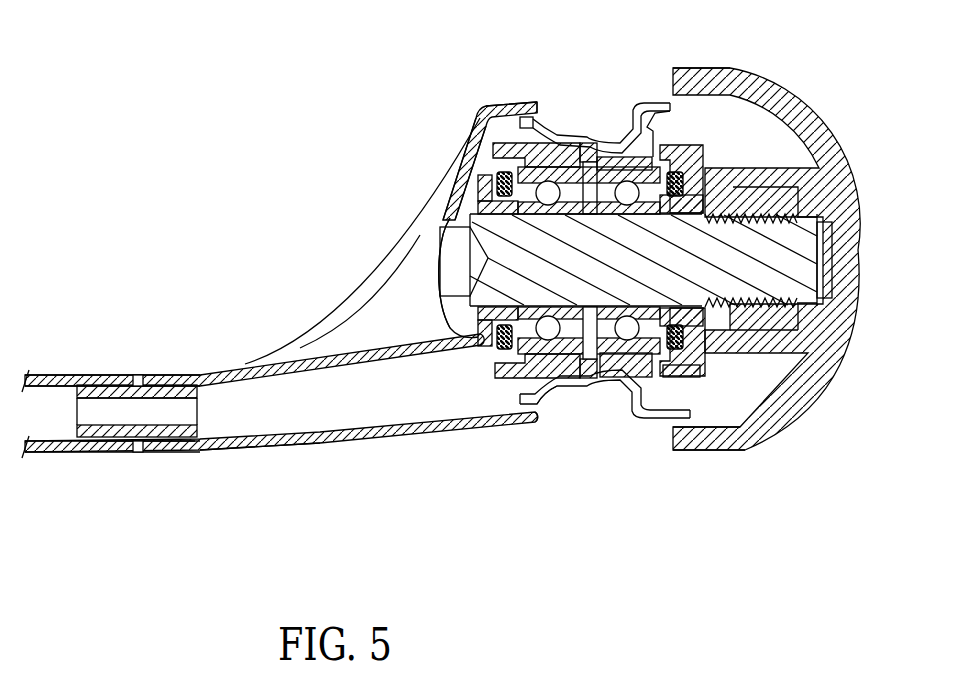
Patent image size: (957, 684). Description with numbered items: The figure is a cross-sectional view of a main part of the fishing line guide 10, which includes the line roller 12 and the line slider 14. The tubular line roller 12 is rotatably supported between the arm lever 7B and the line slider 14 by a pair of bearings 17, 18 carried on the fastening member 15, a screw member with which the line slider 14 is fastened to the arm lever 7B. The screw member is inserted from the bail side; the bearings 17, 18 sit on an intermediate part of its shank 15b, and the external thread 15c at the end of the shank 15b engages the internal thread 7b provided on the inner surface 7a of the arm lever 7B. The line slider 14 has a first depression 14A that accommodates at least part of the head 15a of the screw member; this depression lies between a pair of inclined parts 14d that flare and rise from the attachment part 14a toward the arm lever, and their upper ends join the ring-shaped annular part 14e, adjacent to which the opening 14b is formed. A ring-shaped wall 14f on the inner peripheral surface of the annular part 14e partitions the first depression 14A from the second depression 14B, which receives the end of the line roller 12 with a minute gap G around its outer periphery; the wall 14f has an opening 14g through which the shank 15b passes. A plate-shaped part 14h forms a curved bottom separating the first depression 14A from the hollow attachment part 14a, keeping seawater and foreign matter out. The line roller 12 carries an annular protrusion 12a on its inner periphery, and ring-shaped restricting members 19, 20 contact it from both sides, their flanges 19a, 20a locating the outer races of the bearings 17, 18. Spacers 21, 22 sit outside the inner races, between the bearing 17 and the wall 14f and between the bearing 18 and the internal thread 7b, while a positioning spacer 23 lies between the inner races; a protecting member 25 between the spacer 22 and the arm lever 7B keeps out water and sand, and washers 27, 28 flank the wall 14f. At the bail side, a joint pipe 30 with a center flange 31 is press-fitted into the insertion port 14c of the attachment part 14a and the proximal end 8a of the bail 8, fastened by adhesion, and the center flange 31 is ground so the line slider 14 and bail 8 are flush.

The inner surface 7a is at (675, 74).
The protecting member 25 is at (750, 70).
The spacer 22 is at (700, 155).
The internal thread 7b is at (785, 192).
The arm lever 7B is at (792, 400).
The restricting member 20 is at (680, 362).
The line slider 14 is at (478, 105).
The annular part 14e is at (510, 103).
The gap G is at (533, 102).
The shank 15b is at (549, 140).
The restricting member 19 is at (546, 157).
The flange 19a is at (586, 143).
The bearing 18 is at (606, 157).
The second depression 14B is at (483, 162).
The washer 27 is at (480, 217).
The opening 14g is at (468, 196).
The inclined part 14d is at (430, 240).
The first depression 14A is at (433, 270).
The fastening member 15 is at (452, 302).
The head 15a is at (456, 312).
The external thread 15c is at (770, 297).
The plate-shaped part 14h is at (348, 352).
The bail 8 is at (48, 375).
The center flange 31 is at (137, 378).
The joint pipe 30 is at (157, 392).
The proximal end 8a is at (110, 441).
The insertion port 14c is at (150, 428).
The attachment part 14a is at (208, 451).
The wall 14f is at (486, 340).
The washer 28 is at (505, 328).
The spacer 21 is at (530, 335).
The bearing 17 is at (535, 366).
The positioning spacer 23 is at (586, 362).
The annular protrusion 12a is at (570, 396).
The flange 20a is at (606, 377).
The line roller 12 is at (632, 410).
The opening 14b is at (540, 426).
The fishing line guide 10 is at (520, 486).